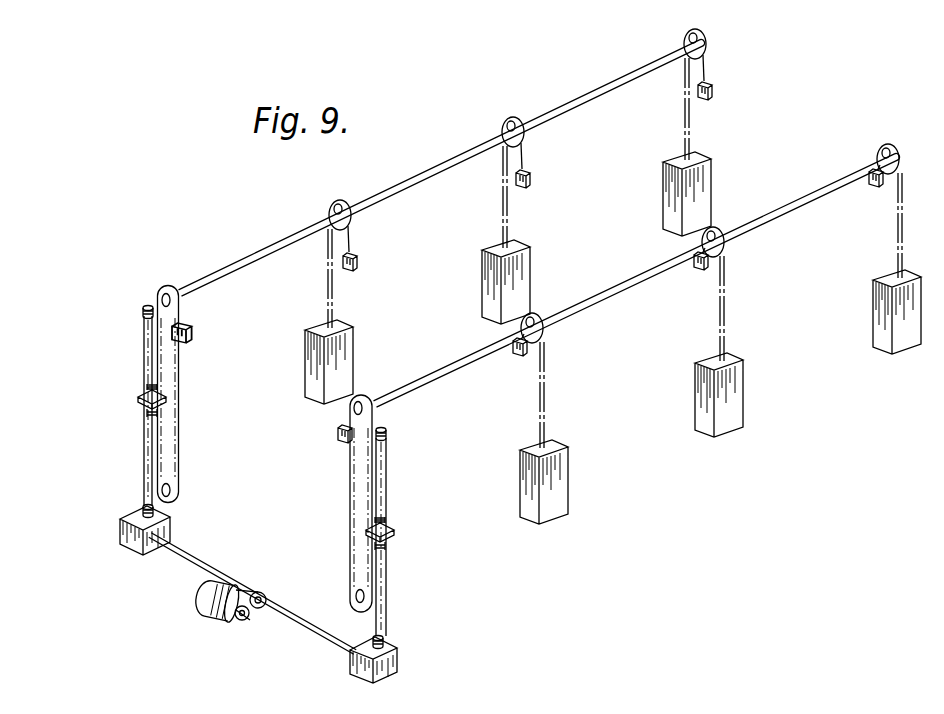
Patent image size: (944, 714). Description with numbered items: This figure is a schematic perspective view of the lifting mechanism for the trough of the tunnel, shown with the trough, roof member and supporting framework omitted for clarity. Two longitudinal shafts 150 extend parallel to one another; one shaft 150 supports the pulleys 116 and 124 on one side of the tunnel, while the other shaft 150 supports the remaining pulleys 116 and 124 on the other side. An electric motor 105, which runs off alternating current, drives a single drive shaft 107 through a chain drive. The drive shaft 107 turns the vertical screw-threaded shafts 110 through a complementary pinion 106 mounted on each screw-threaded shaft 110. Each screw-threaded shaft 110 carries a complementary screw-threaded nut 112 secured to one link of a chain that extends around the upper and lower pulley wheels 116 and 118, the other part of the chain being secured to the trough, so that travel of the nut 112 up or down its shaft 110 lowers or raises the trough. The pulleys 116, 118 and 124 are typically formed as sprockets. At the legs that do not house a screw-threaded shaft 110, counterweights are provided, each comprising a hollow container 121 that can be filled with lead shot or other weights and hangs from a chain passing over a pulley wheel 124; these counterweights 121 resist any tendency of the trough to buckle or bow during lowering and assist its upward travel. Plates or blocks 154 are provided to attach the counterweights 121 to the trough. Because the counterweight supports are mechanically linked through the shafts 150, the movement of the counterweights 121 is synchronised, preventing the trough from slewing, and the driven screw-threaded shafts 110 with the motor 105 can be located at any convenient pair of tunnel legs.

The electric motor 105 is at (225, 597).
The pinion 106 is at (121, 540).
The drive shaft 107 is at (186, 567).
The screw-threaded shaft 110 is at (144, 411).
The screw-threaded nut 112 is at (140, 403).
The upper pulley wheel 116 is at (163, 285).
The lower pulley wheel 118 is at (179, 489).
The counterweight container 121 is at (347, 330).
The pulley wheel 124 is at (335, 201).
The longitudinal shaft 150 is at (778, 206).
The plates or blocks 154 is at (357, 257).